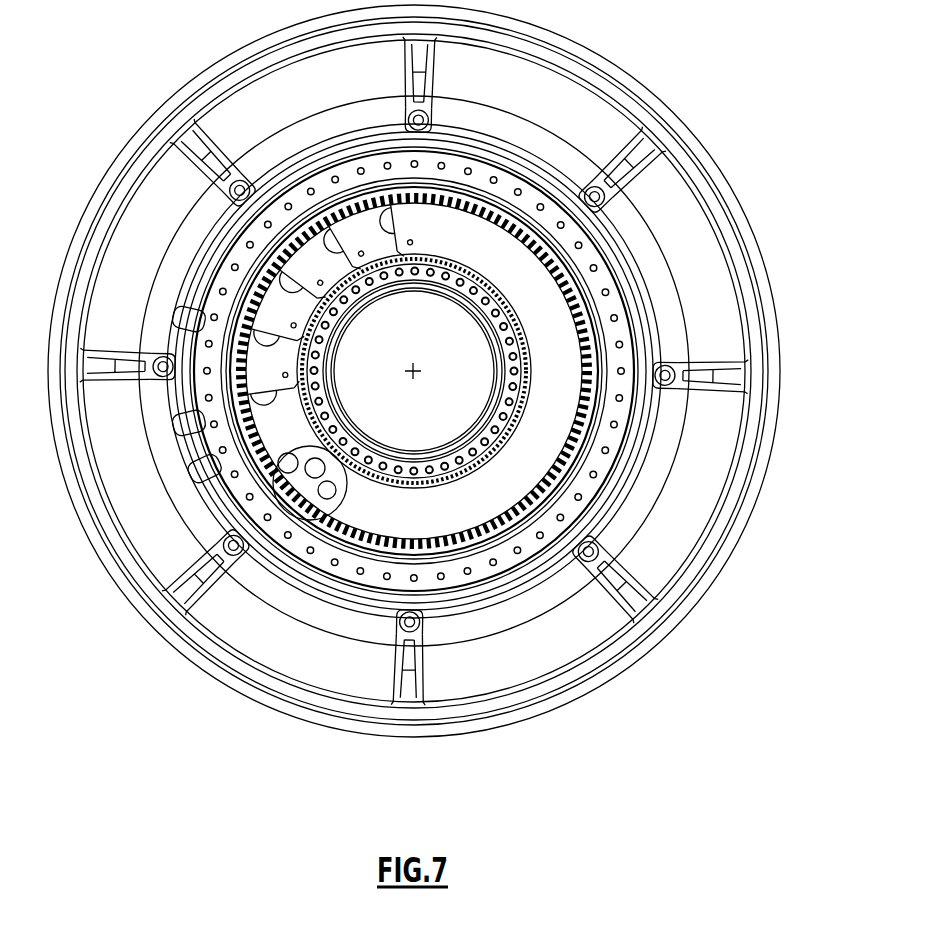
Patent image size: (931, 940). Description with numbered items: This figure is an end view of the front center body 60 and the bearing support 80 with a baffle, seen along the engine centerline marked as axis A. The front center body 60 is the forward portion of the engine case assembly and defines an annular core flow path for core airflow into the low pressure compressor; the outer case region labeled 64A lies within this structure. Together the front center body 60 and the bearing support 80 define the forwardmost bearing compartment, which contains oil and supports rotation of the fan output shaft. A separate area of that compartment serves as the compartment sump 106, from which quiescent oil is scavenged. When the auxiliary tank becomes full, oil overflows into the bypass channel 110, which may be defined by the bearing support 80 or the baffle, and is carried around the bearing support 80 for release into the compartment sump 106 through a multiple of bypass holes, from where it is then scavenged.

The frame assembly 60 is at (778, 437).
The outer case 64A is at (693, 253).
The strut bracket 106 is at (420, 632).
The inner ring 110 is at (548, 182).
The bolt flange 80 is at (596, 255).
The central axis A is at (418, 367).